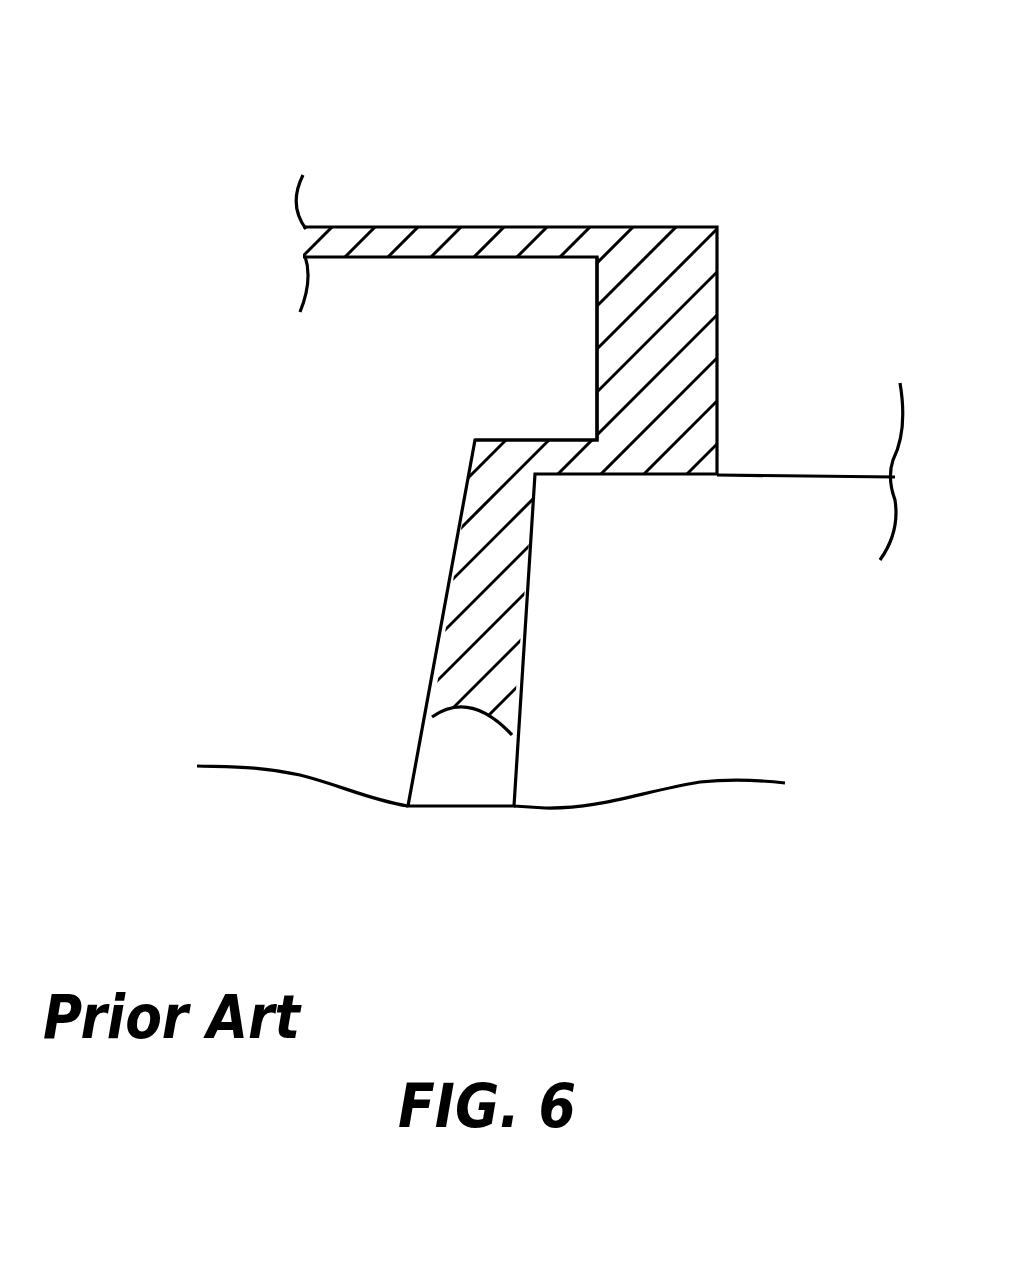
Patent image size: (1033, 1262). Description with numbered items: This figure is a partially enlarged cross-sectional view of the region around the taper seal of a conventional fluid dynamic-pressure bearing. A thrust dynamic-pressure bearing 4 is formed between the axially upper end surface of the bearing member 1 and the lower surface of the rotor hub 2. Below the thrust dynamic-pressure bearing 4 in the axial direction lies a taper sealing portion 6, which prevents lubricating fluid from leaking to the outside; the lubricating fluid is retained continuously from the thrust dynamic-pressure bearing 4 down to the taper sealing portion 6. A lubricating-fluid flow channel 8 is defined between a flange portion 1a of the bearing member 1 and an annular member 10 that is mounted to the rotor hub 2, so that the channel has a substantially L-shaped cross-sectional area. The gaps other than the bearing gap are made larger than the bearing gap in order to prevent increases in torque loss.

The rotor hub 2 is at (398, 49).
The thrust dynamic-pressure bearing 4 is at (457, 226).
The flange portion 1a is at (553, 325).
The lubricating-fluid flow channel 8 is at (653, 352).
The bearing member 1 is at (347, 546).
The annular member 10 is at (672, 648).
The taper sealing portion 6 is at (464, 722).